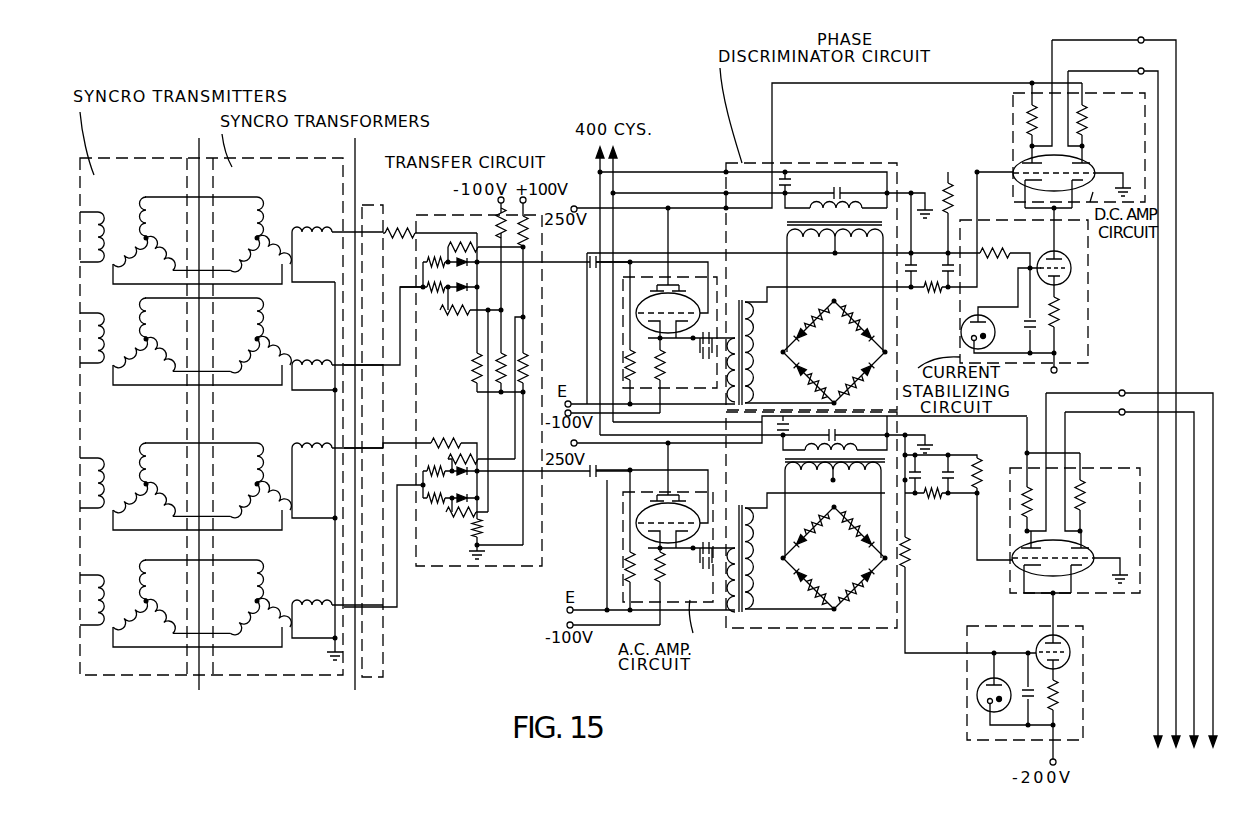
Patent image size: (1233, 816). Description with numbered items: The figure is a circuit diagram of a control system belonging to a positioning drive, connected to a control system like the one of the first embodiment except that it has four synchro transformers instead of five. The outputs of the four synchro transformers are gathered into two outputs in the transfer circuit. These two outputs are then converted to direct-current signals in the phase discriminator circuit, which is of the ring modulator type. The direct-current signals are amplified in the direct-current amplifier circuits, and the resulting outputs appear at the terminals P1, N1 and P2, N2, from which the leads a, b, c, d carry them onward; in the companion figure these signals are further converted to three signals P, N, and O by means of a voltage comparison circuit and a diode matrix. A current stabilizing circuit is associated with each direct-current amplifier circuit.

The positive output terminal 1 P1 is at (1116, 381).
The negative output terminal 1 N1 is at (1115, 397).
The positive output terminal 2 P2 is at (1131, 557).
The negative output terminal 2 N2 is at (1131, 578).
The output lead a is at (1157, 764).
The output lead b is at (1176, 764).
The output lead c is at (1194, 764).
The output lead d is at (1213, 764).